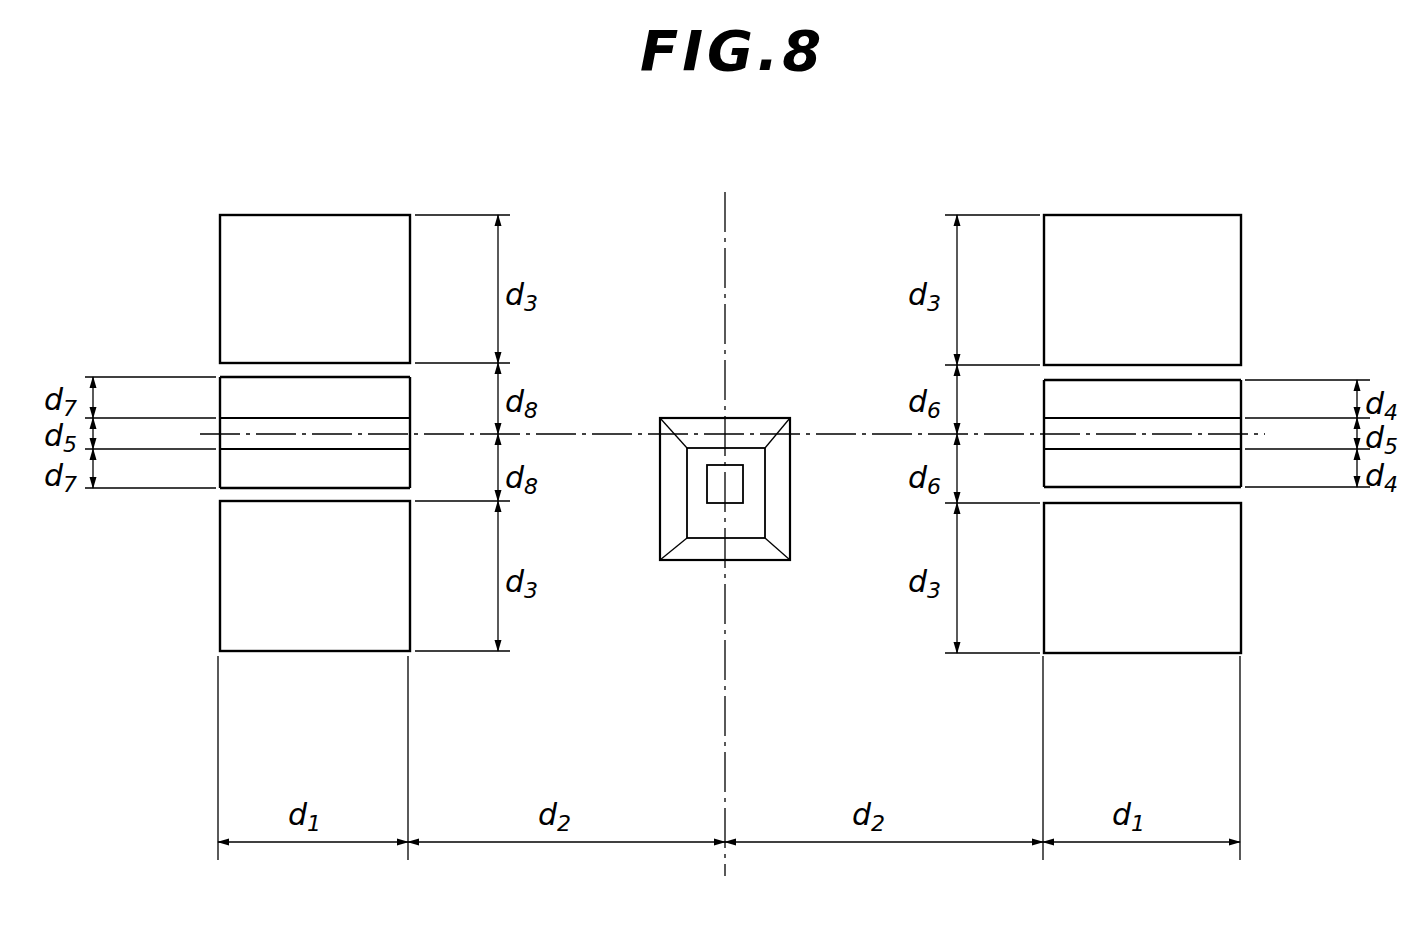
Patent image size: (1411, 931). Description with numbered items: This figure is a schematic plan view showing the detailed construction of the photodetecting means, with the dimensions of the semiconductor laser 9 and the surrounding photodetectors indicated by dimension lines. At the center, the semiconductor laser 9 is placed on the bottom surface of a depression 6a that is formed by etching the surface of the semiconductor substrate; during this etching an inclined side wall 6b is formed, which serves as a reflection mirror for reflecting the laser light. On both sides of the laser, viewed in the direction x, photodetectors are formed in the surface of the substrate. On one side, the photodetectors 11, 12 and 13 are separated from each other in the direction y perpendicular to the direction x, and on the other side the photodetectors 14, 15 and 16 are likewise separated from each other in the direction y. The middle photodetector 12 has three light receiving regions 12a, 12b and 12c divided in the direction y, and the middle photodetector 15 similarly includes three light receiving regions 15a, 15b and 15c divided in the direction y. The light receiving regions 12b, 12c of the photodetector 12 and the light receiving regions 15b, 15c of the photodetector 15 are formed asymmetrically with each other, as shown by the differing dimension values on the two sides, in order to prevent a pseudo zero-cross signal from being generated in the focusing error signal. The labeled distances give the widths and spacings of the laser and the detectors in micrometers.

The photodetector 16 is at (231, 254).
The middle photodetector 15 is at (243, 493).
The light receiving region 15a is at (220, 442).
The light receiving region 15b is at (232, 398).
The light receiving region 15c is at (230, 468).
The photodetector 14 is at (229, 622).
The photodetector 13 is at (1234, 265).
The middle photodetector 12 is at (1182, 489).
The light receiving region 12a is at (1243, 444).
The light receiving region 12b is at (1222, 399).
The light receiving region 12c is at (1230, 475).
The photodetector 11 is at (1227, 643).
The depression 6a is at (743, 553).
The inclined side wall 6b is at (752, 427).
The semiconductor laser 9 is at (710, 488).